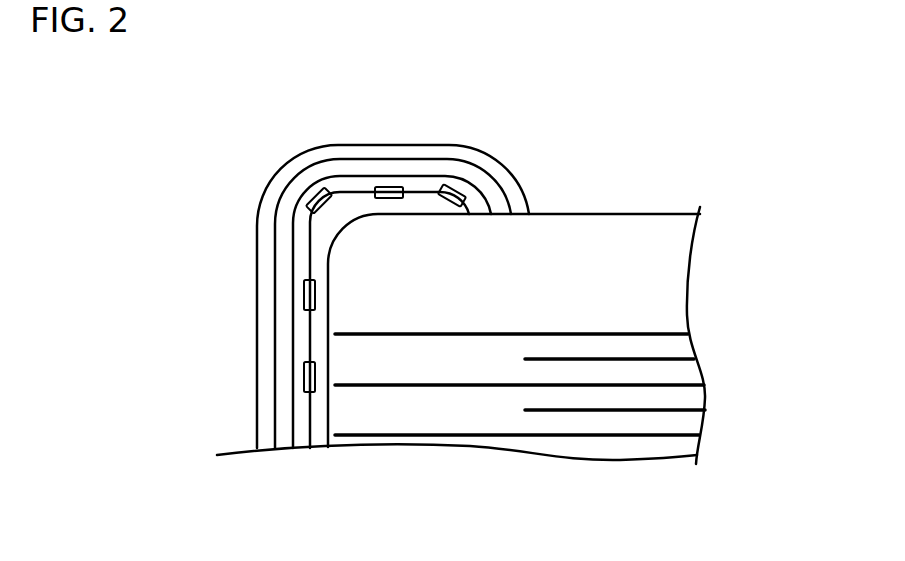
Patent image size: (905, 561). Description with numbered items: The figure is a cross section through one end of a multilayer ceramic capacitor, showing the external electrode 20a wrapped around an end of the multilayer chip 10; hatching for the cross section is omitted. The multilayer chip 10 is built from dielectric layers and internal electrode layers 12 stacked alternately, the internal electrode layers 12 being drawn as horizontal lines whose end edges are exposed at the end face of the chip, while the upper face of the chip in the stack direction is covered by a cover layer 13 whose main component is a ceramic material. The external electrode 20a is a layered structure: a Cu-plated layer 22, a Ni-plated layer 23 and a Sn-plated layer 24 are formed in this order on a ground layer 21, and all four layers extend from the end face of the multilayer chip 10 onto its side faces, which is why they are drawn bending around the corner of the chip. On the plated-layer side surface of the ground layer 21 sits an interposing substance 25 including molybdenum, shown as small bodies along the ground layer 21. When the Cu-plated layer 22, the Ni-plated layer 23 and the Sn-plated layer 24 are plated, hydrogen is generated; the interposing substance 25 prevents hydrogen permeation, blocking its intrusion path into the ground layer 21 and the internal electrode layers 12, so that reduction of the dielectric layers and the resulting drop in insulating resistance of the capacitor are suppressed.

The multilayer chip 10 is at (682, 206).
The internal electrode layer 12 is at (470, 436).
The cover layer 13 is at (623, 253).
The external electrode 20a is at (157, 102).
The ground layer 21 is at (320, 252).
The Cu-plated layer 22 is at (301, 220).
The Ni-plated layer 23 is at (300, 193).
The Sn-plated layer 24 is at (320, 153).
The interposing substance 25 is at (303, 295).